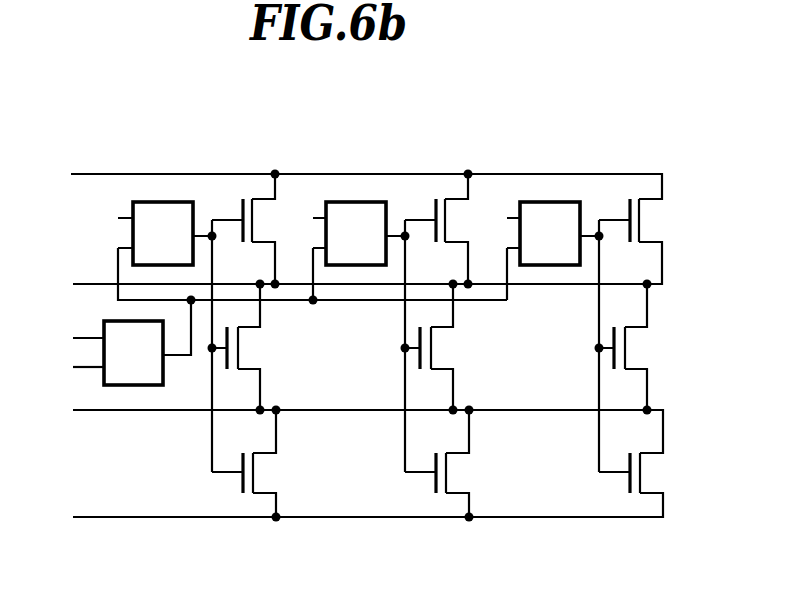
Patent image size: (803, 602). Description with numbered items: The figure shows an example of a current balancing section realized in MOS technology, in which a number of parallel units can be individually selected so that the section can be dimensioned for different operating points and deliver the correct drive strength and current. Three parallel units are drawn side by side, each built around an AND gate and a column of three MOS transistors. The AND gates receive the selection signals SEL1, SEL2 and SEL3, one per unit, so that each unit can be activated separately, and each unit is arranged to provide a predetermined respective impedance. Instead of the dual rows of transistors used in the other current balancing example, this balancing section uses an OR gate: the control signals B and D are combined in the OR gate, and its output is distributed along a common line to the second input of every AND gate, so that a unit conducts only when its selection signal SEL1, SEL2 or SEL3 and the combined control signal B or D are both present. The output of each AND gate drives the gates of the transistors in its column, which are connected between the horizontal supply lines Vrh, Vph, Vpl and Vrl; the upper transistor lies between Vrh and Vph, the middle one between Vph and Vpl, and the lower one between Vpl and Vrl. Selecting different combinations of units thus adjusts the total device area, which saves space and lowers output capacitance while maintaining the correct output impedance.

The selection signal SEL1 is at (507, 218).
The selection signal SEL2 is at (313, 218).
The selection signal SEL3 is at (118, 218).
The high reset voltage supply line Vrh is at (345, 177).
The high pixel voltage supply line Vph is at (343, 269).
The low pixel voltage supply line Vpl is at (347, 422).
The low reset voltage supply line Vrl is at (350, 511).
The control signal B is at (280, 342).
The control signal D is at (78, 366).